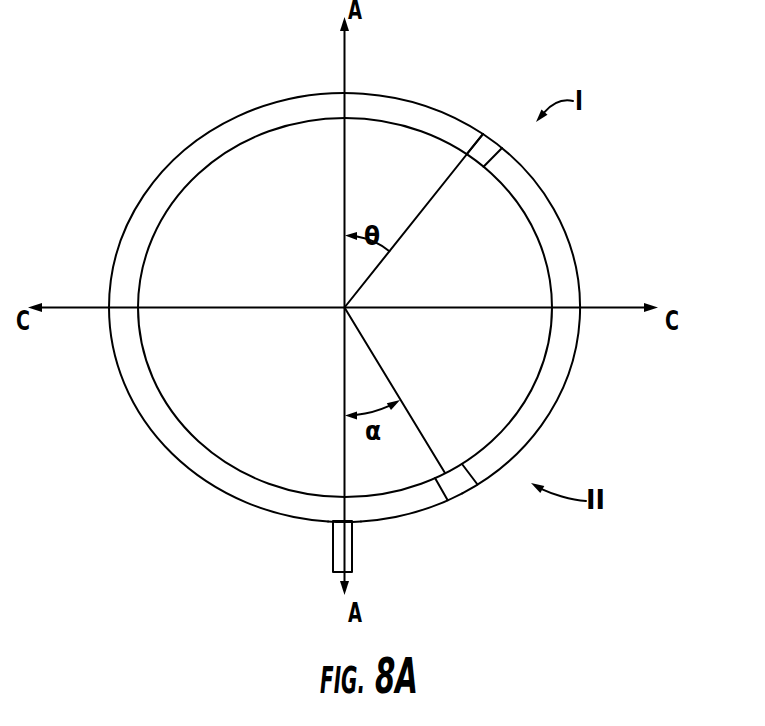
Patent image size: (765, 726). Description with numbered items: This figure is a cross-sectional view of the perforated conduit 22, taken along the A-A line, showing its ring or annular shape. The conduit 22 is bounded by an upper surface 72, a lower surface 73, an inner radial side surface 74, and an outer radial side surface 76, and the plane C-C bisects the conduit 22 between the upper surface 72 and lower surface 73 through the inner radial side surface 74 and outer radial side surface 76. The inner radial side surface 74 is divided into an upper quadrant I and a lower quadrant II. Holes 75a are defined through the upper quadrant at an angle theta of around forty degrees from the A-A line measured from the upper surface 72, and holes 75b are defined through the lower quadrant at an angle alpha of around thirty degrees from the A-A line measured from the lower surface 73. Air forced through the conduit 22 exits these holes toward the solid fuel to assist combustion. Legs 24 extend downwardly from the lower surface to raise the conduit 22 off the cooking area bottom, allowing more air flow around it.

The perforated conduit 22 is at (176, 108).
The legs 24 is at (332, 546).
The upper surface 72 is at (367, 92).
The lower surface 73 is at (357, 523).
The inner radial side surface 74 is at (555, 210).
The holes 75a is at (490, 134).
The holes 75b is at (458, 500).
The outer radial side surface 76 is at (122, 386).